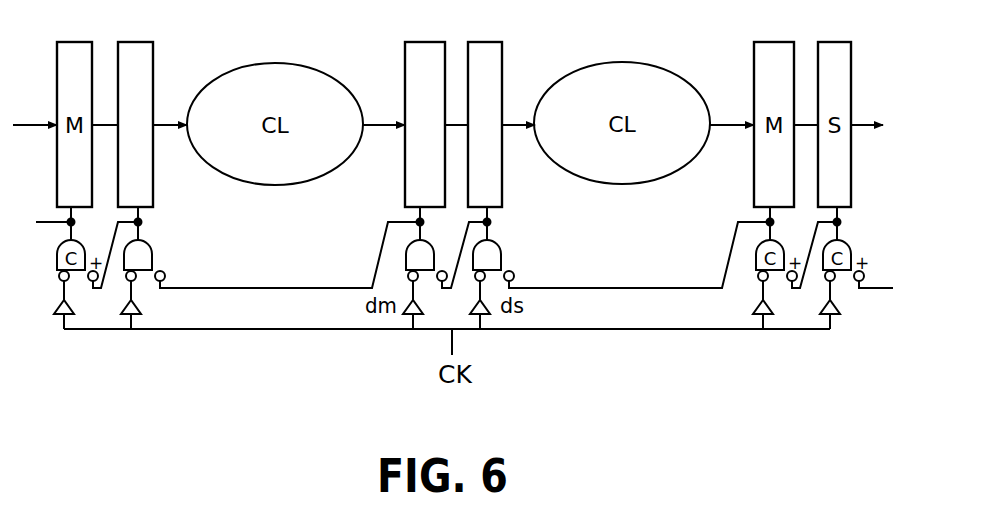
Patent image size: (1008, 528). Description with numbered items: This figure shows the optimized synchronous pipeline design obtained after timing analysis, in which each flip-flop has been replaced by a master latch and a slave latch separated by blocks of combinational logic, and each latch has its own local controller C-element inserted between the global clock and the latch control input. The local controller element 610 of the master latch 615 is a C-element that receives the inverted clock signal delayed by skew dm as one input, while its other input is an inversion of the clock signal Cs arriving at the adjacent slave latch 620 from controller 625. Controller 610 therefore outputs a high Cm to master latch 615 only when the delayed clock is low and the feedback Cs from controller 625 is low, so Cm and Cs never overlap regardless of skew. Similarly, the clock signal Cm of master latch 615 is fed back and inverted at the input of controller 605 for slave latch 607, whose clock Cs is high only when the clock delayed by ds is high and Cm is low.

The controller 605 is at (149, 242).
The slave latch 607 is at (153, 189).
The local controller element 610 is at (406, 258).
The master latch 615 is at (405, 172).
The slave latch 620 is at (500, 191).
The controller 625 is at (497, 241).